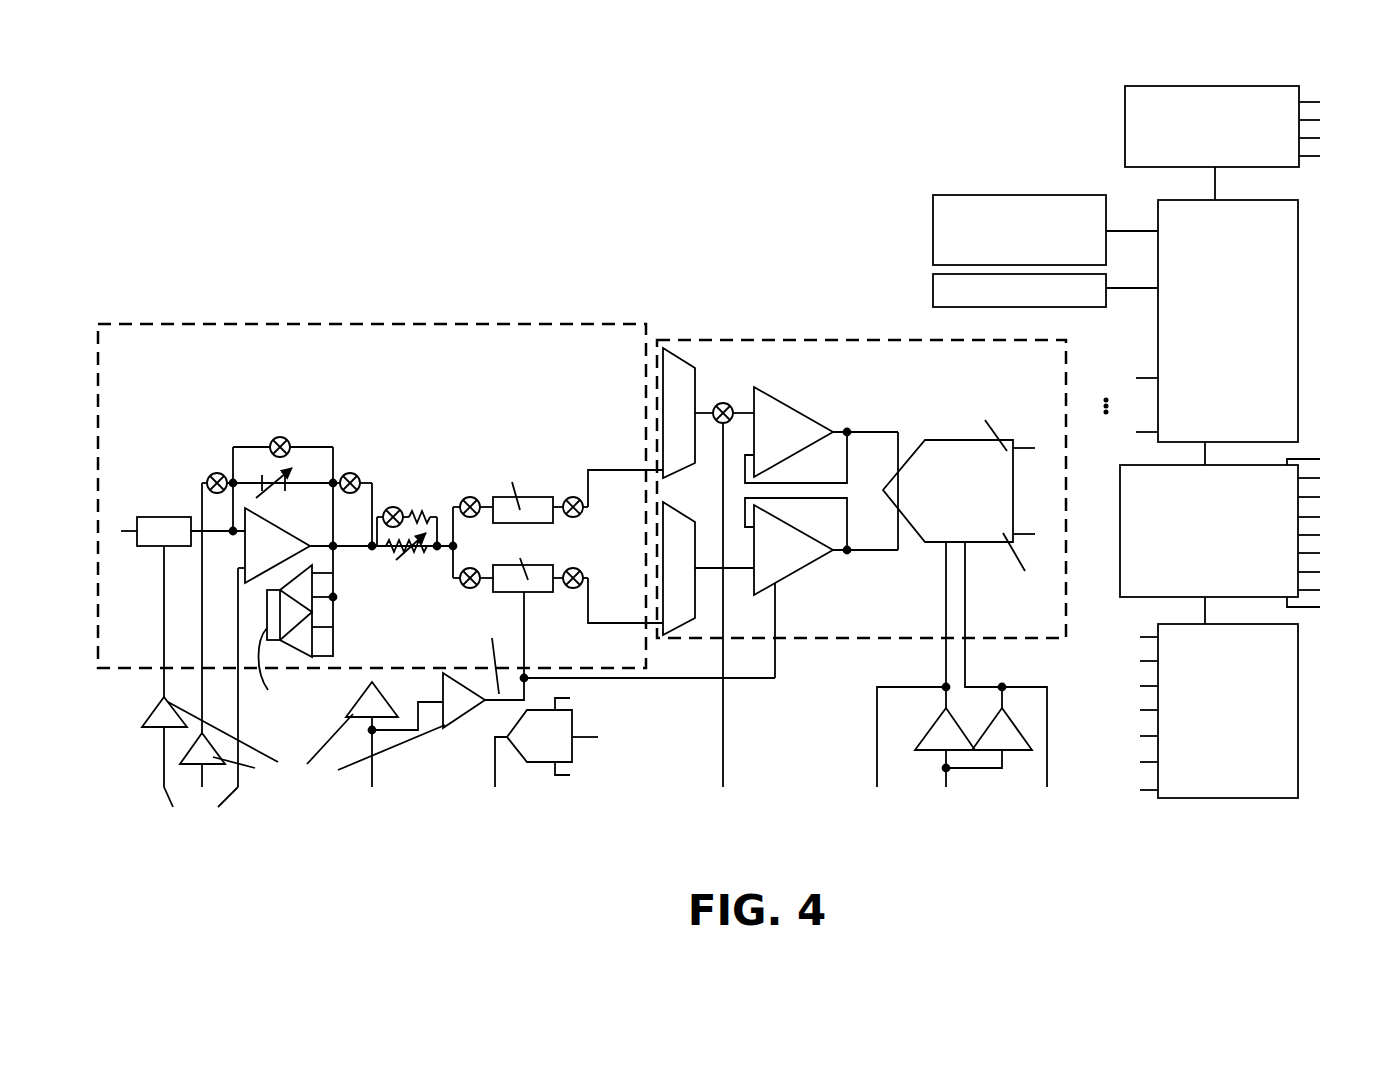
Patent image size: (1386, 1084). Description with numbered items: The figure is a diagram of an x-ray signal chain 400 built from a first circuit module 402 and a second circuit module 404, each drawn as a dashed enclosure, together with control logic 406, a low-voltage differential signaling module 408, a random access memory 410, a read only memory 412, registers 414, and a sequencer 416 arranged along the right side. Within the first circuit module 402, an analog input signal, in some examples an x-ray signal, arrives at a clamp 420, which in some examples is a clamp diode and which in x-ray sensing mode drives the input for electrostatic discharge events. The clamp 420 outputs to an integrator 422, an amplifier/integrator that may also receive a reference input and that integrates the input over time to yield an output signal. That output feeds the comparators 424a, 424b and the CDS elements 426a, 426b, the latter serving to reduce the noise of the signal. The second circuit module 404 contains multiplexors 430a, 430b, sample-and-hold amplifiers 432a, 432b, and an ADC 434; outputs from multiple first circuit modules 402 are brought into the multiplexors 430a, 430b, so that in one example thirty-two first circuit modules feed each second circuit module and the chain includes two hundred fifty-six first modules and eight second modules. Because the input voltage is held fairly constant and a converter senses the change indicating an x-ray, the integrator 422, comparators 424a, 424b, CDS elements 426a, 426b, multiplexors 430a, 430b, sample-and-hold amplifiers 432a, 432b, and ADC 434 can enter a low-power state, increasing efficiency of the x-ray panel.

The x-ray signal chain 400 is at (248, 218).
The first circuit module 402 is at (203, 320).
The second circuit module 404 is at (772, 336).
The control logic 406 is at (1300, 243).
The low-voltage differential signaling module (LVDS) 408 is at (1194, 557).
The random access memory (RAM) 410 is at (933, 222).
The read only memory (ROM) 412 is at (933, 288).
The registers 414 is at (1125, 118).
The sequencer 416 is at (1300, 706).
The clamp 420 is at (166, 530).
The integrator 422 is at (270, 520).
The comparator 424a is at (333, 597).
The comparator 424b is at (333, 656).
The CDS element 426a is at (493, 497).
The CDS element 426b is at (537, 592).
The multiplexor 430a is at (727, 381).
The multiplexor 430b is at (697, 548).
The sample-and-hold amplifier 432a is at (790, 406).
The sample-and-hold amplifier 432b is at (782, 527).
The ADC 434 is at (968, 482).